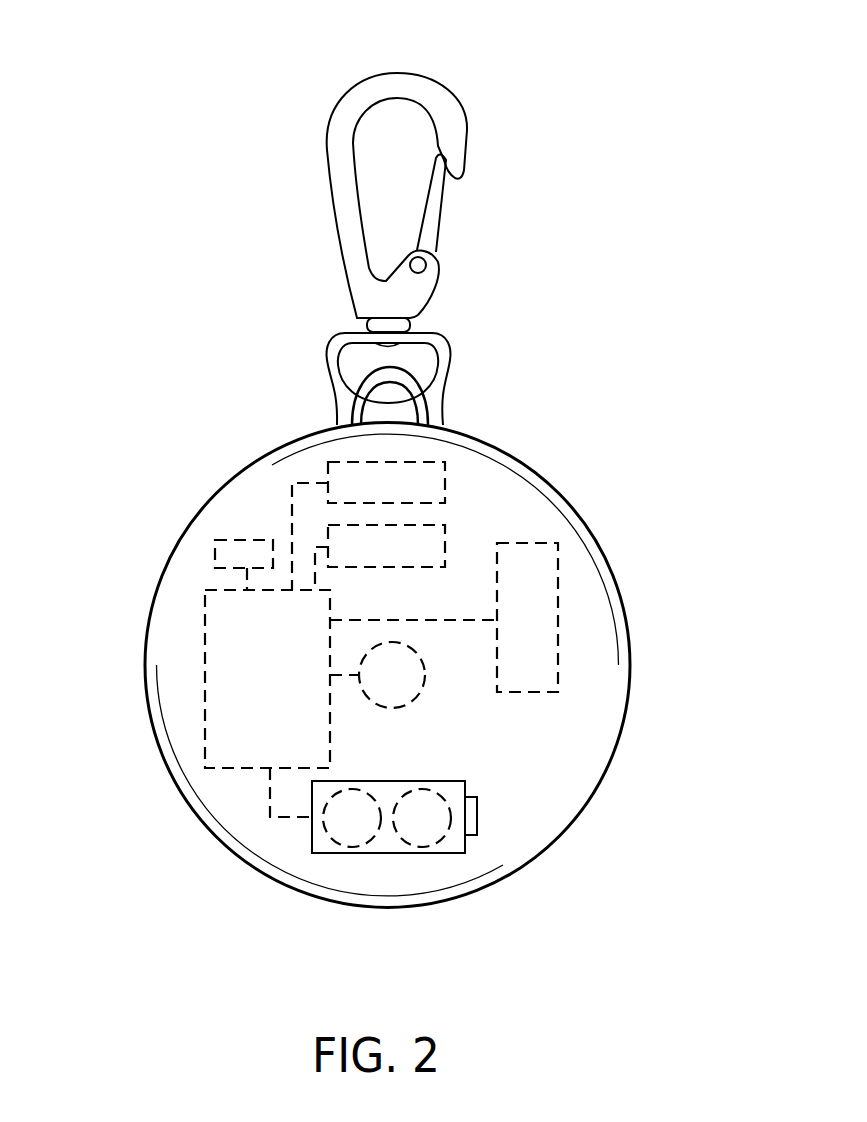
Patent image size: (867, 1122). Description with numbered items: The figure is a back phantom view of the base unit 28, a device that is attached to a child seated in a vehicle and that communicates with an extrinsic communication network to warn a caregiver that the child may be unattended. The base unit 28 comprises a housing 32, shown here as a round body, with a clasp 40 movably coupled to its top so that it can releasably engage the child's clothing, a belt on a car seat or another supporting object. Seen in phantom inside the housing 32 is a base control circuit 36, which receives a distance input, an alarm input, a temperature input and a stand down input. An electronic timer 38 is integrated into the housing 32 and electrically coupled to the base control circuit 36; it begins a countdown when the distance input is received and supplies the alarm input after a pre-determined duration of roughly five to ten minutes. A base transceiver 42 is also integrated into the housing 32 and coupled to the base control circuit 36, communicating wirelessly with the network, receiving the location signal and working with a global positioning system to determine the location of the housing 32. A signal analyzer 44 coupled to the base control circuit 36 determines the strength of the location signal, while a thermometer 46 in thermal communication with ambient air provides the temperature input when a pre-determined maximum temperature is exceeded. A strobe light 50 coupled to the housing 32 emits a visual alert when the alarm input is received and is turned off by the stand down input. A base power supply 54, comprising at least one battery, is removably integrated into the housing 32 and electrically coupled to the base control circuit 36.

The base unit 28 is at (626, 510).
The housing 32 is at (170, 557).
The base control circuit 36 is at (205, 668).
The electronic timer 38 is at (250, 540).
The clasp 40 is at (447, 97).
The base transceiver 42 is at (558, 618).
The signal analyzer 44 is at (445, 462).
The thermometer 46 is at (445, 527).
The strobe light 50 is at (415, 700).
The base power supply 54 is at (435, 835).